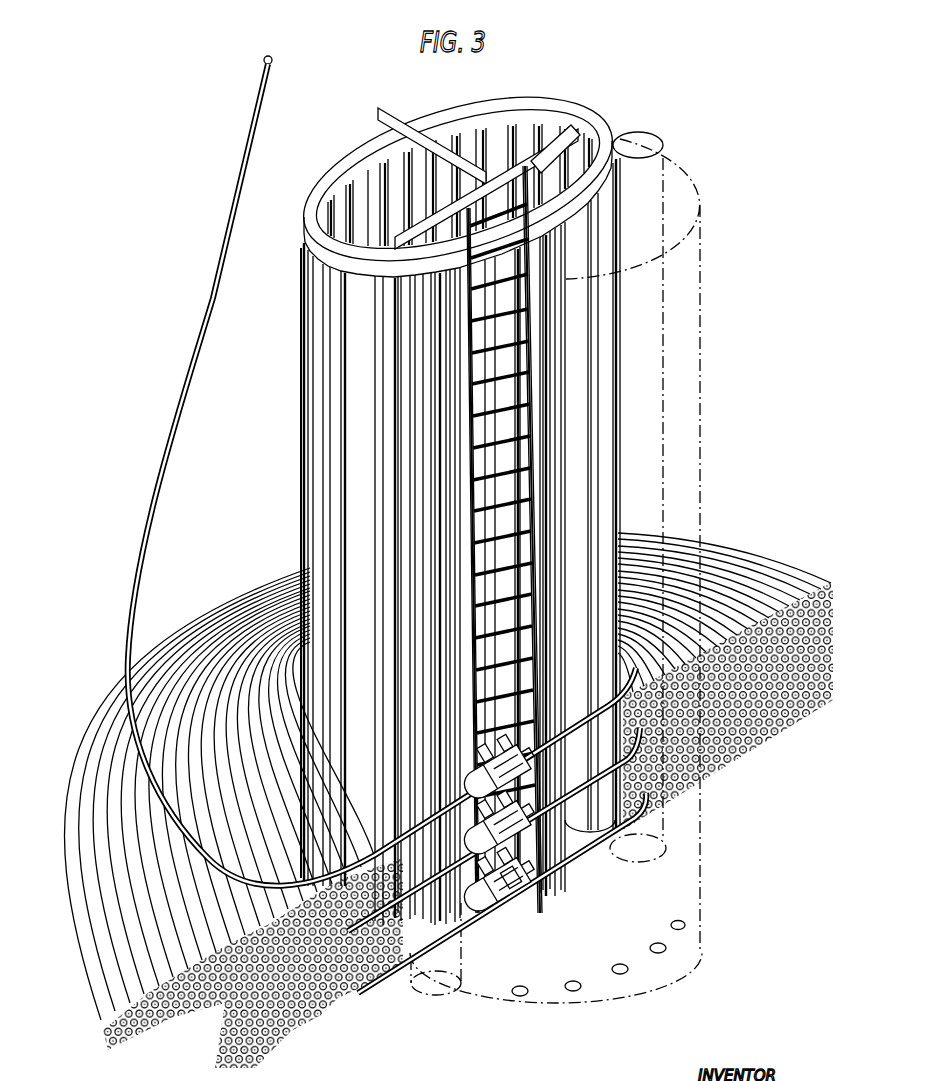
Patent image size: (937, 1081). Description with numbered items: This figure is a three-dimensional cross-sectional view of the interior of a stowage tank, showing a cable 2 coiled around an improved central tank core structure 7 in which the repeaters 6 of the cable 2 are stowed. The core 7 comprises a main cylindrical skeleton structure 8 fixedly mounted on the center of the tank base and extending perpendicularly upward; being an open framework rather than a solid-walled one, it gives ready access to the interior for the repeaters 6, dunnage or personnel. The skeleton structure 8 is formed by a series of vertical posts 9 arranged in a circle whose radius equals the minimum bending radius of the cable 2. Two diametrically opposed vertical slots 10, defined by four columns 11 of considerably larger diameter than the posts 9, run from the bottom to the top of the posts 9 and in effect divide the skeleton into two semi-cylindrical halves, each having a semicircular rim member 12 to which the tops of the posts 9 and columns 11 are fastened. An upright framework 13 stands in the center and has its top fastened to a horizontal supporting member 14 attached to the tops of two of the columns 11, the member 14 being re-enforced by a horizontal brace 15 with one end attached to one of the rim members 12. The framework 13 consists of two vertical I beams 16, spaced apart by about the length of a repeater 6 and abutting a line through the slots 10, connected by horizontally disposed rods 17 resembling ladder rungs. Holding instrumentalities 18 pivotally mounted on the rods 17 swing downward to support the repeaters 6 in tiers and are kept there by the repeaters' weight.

The cable 2 is at (250, 70).
The repeaters 6 is at (494, 886).
The tank core structure 7 is at (352, 78).
The main cylindrical skeleton structure 8 is at (276, 393).
The vertical posts 9 is at (302, 424).
The vertical slots 10 is at (620, 830).
The columns 11 is at (593, 334).
The semicircular rim member 12 is at (462, 97).
The upright framework 13 is at (563, 188).
The horizontal supporting member 14 is at (543, 140).
The horizontal brace 15 is at (397, 135).
The vertical I beams 16 is at (545, 830).
The horizontally disposed rods 17 is at (548, 388).
The holding instrumentalities 18 is at (512, 882).